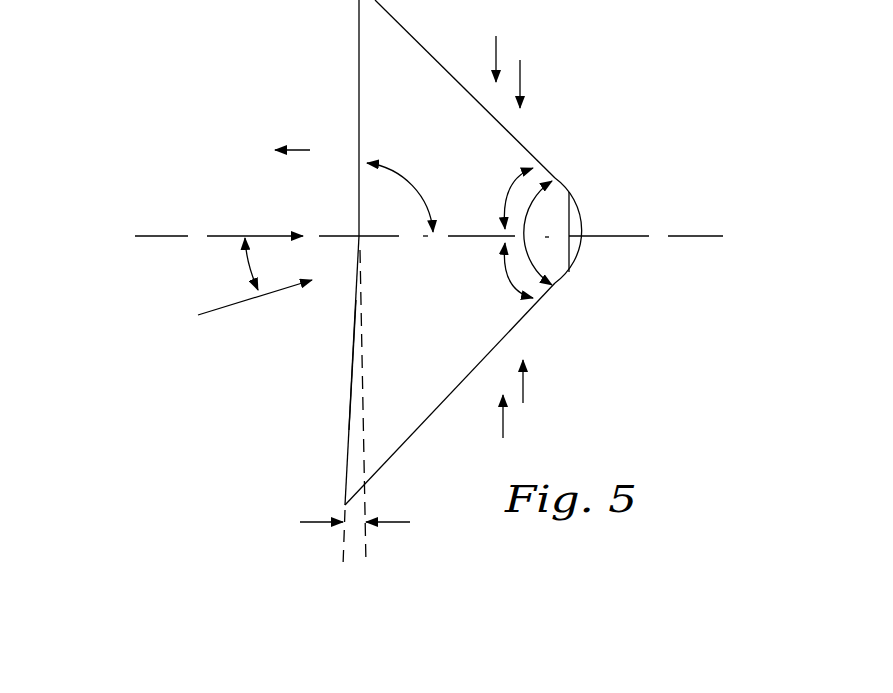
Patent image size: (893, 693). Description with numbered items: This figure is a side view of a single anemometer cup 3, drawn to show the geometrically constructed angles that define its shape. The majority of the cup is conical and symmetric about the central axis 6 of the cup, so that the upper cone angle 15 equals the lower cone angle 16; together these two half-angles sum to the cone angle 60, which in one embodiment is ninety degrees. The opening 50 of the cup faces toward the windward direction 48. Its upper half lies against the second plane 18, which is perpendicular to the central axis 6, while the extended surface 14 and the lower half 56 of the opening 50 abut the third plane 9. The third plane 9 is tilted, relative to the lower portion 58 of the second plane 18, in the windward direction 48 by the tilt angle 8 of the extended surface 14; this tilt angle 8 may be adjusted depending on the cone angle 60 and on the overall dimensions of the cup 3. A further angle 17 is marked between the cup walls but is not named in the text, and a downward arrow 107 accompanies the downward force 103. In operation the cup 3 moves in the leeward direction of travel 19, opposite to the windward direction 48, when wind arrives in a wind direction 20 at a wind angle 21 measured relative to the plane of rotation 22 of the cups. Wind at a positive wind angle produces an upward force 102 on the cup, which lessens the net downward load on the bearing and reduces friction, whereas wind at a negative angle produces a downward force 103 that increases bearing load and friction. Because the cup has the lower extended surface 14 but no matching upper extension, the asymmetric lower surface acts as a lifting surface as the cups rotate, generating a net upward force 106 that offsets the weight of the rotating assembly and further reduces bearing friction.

The cup 3 is at (438, 409).
The central axis 6 is at (606, 234).
The tilt angle 8 is at (316, 522).
The third plane 9 is at (342, 546).
The extended surface 14 is at (353, 461).
The upper cone angle 15 is at (508, 199).
The lower cone angle 16 is at (510, 273).
The wall angle 17 is at (406, 178).
The second plane 18 is at (367, 548).
The leeward direction of travel 19 is at (283, 235).
The wind direction 20 is at (273, 296).
The wind angle 21 is at (246, 265).
The plane of rotation 22 is at (165, 236).
The windward direction 48 is at (300, 146).
The opening 50 is at (358, 234).
The lower half of the opening 56 is at (350, 420).
The lower portion of the second plane 58 is at (363, 403).
The cone angle 60 is at (529, 205).
The upward force 102 is at (526, 383).
The downward force 103 is at (523, 75).
The upward force 106 is at (505, 423).
The downward force 107 is at (493, 53).